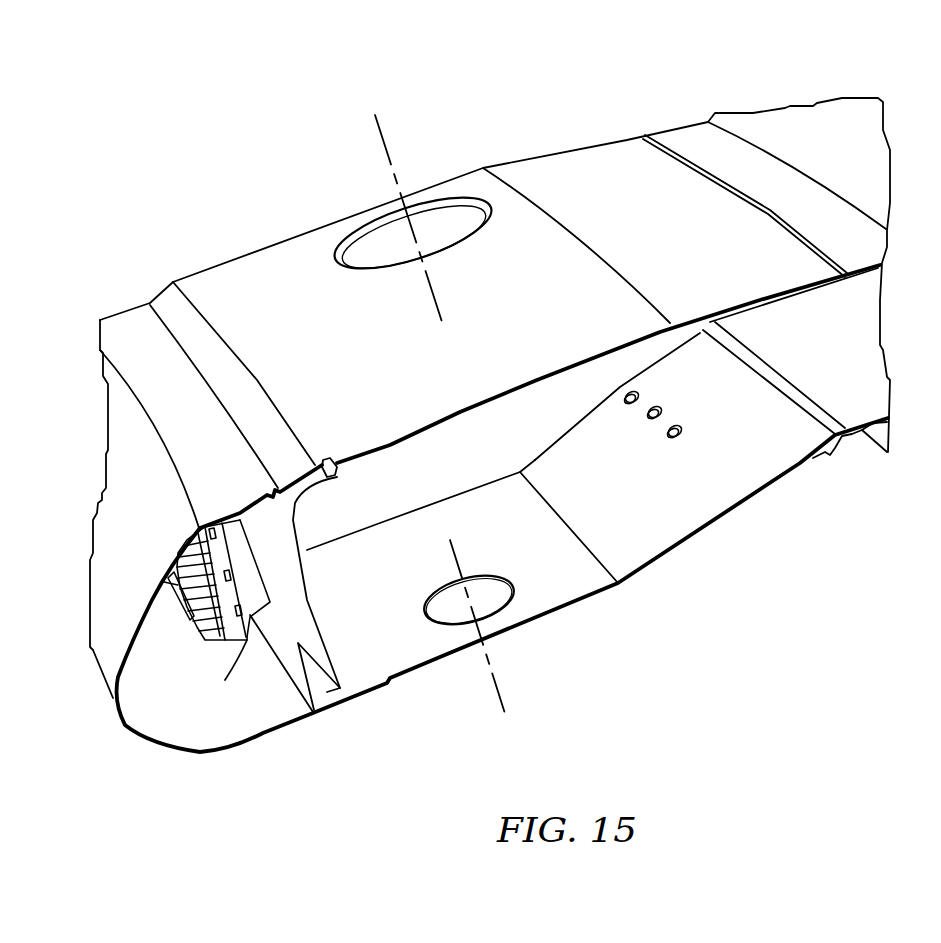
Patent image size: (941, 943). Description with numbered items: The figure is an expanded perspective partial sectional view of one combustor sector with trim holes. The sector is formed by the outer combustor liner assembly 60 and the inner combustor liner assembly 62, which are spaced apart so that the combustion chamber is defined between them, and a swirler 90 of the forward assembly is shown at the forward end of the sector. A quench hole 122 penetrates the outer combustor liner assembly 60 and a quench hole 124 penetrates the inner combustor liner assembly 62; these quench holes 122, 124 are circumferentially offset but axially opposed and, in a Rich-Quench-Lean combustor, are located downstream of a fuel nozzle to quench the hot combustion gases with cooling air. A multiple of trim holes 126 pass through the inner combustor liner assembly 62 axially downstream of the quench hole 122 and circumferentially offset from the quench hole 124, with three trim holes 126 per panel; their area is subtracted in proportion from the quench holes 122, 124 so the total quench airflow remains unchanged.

The outer combustor liner assembly 60 is at (589, 131).
The inner combustor liner assembly 62 is at (653, 580).
The swirler 90 is at (240, 631).
The quench hole 122 is at (448, 207).
The quench hole 124 is at (505, 605).
The trim holes 126 is at (647, 416).